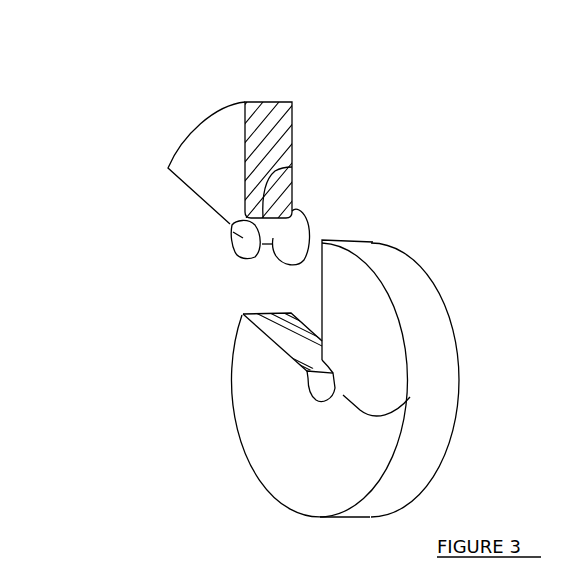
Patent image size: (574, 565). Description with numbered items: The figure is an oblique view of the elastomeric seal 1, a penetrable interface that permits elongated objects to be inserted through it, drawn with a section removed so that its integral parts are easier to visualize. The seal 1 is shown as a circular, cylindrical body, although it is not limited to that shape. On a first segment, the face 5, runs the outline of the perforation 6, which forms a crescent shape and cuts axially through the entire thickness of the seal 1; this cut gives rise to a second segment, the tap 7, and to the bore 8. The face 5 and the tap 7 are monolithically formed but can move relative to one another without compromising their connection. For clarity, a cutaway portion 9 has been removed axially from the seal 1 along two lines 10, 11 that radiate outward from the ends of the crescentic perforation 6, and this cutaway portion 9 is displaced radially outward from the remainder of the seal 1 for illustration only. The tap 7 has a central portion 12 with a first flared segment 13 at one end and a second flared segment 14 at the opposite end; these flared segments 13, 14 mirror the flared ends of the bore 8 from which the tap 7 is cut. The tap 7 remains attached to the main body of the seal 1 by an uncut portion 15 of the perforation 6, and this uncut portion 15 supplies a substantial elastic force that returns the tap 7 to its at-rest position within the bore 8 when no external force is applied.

The elastomeric seal 1 is at (460, 442).
The face 5 is at (287, 458).
The perforation 6 is at (410, 397).
The tap 7 is at (244, 238).
The bore 8 is at (323, 388).
The cutaway portion 9 is at (235, 90).
The line 10 is at (276, 338).
The line 11 is at (322, 300).
The central portion 12 is at (267, 248).
The first flared segment 13 is at (306, 222).
The second flared segment 14 is at (232, 235).
The uncut portion 15 is at (292, 167).